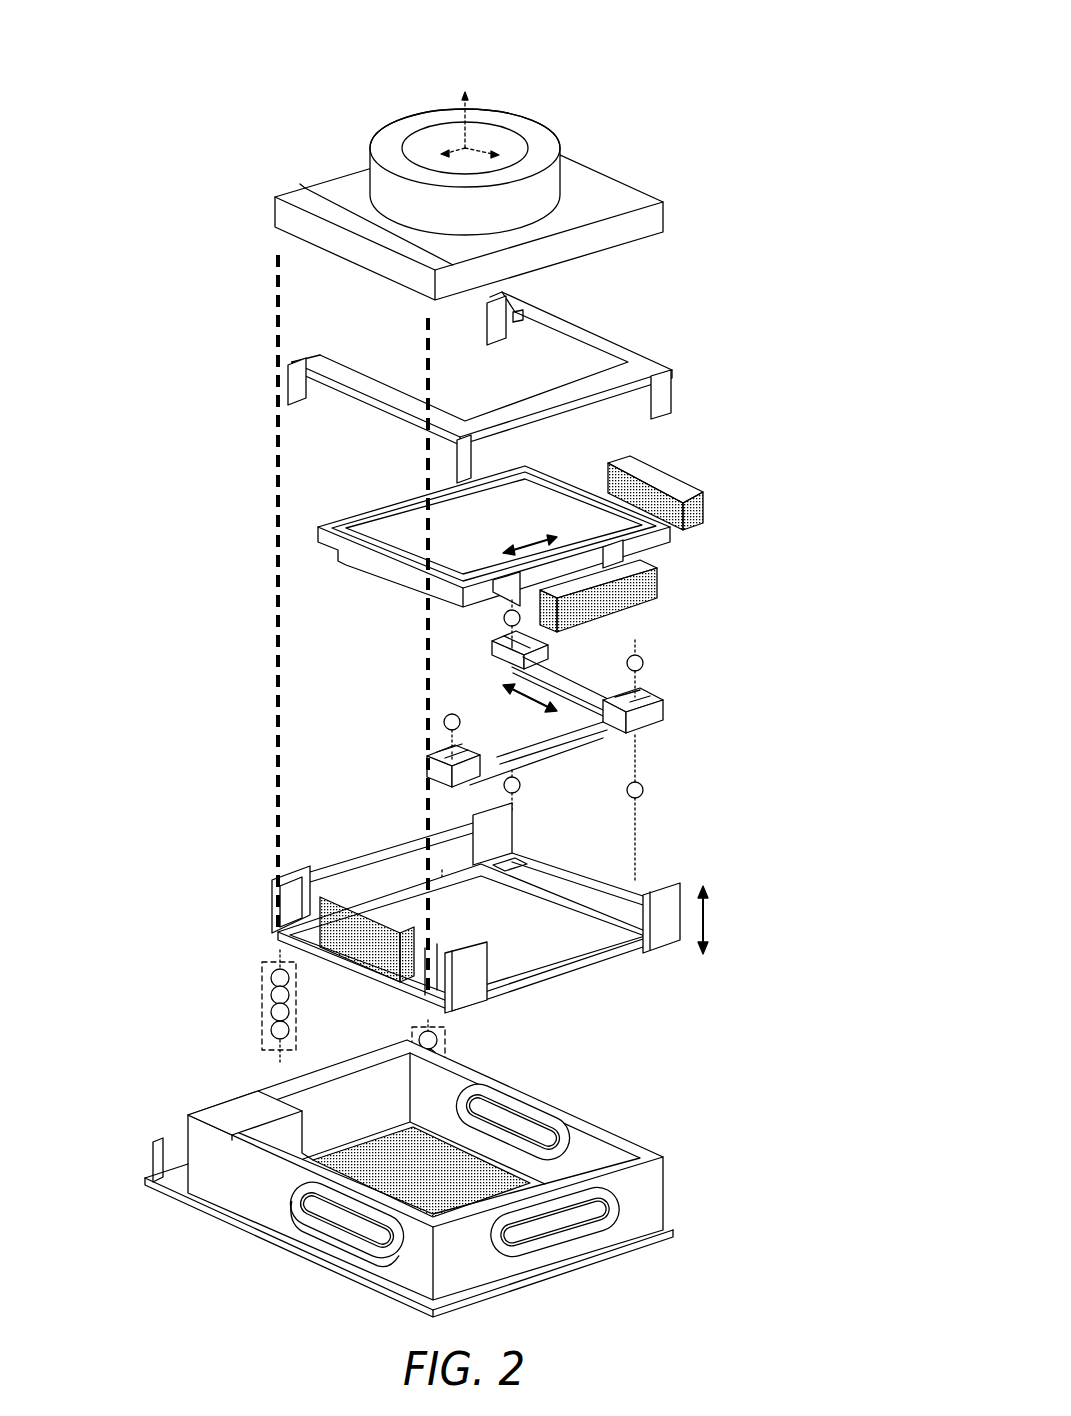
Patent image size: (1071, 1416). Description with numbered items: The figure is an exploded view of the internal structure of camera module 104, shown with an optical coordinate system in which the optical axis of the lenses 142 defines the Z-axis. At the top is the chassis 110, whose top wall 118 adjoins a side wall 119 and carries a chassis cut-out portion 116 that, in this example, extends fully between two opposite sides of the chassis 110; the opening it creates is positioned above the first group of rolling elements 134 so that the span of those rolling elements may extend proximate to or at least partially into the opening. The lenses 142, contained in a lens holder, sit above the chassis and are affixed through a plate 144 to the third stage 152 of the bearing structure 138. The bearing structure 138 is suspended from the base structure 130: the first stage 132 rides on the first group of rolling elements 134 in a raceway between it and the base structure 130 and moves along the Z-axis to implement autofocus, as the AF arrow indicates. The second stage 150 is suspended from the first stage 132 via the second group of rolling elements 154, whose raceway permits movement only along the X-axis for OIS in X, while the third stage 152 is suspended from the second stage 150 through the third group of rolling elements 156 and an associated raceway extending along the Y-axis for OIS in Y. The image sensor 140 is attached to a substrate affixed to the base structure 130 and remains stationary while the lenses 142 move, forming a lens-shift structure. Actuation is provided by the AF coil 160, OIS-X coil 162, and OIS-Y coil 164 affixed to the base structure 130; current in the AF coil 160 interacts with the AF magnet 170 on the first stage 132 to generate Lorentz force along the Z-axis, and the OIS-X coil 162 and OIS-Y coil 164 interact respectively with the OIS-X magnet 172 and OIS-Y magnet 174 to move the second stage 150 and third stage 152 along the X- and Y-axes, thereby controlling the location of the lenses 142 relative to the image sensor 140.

The camera module 104 is at (250, 36).
The chassis 110 is at (454, 214).
The chassis cut-out portion 116 is at (275, 212).
The top wall 118 is at (627, 189).
The side wall 119 is at (628, 233).
The lenses 142 is at (537, 121).
The plate 144 is at (650, 354).
The third stage 152 is at (335, 527).
The OIS-Y magnet 174 is at (654, 470).
The OIS-X magnet 172 is at (688, 608).
The third group of rolling elements 156 is at (430, 838).
The second stage 150 is at (427, 762).
The second group of rolling elements 154 is at (448, 920).
The first stage 132 is at (580, 955).
The AF magnet 170 is at (337, 928).
The first group of rolling elements 134 is at (410, 1093).
The bearing structure 138 is at (812, 461).
The base structure 130 is at (505, 1178).
The image sensor 140 is at (421, 1172).
The AF coil 160 is at (293, 1211).
The OIS-X coil 162 is at (557, 1242).
The OIS-Y coil 164 is at (517, 1113).